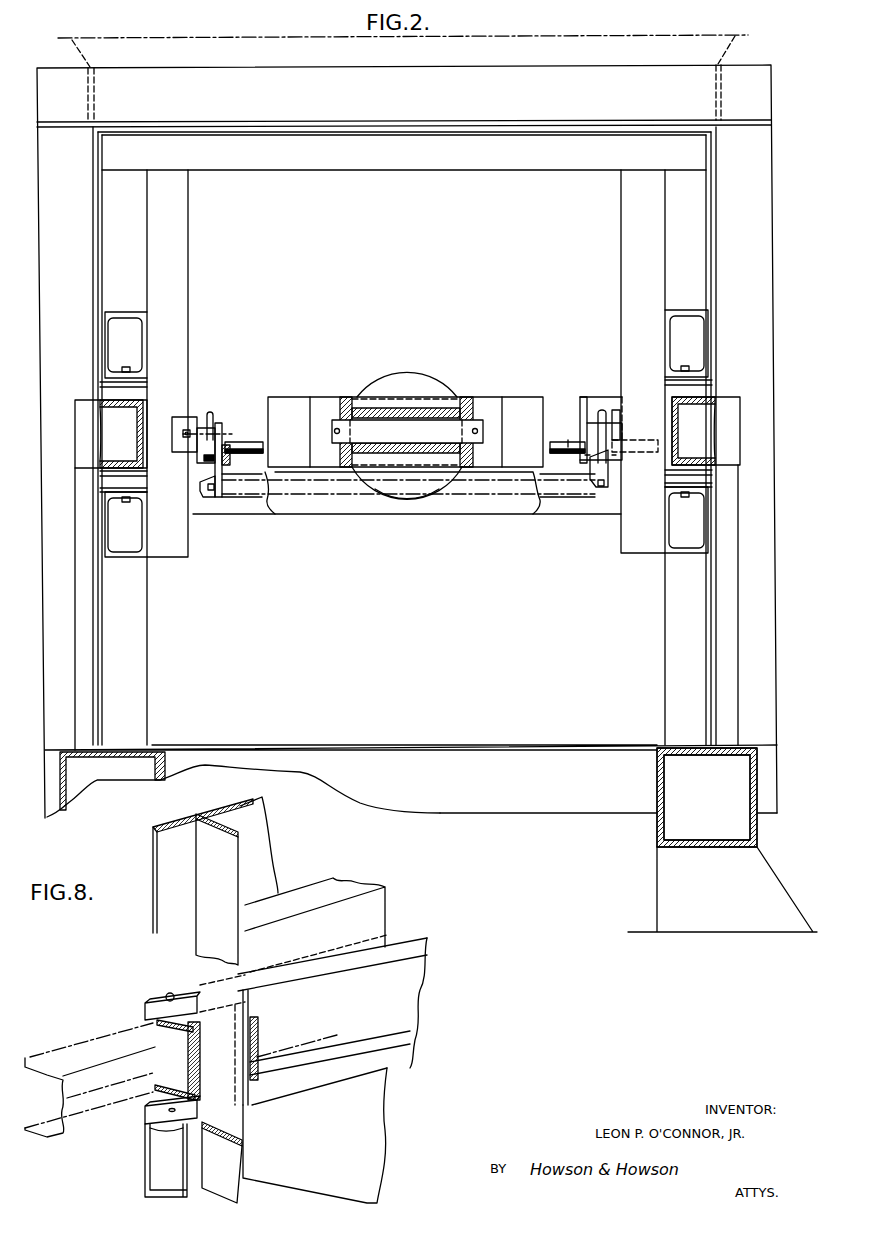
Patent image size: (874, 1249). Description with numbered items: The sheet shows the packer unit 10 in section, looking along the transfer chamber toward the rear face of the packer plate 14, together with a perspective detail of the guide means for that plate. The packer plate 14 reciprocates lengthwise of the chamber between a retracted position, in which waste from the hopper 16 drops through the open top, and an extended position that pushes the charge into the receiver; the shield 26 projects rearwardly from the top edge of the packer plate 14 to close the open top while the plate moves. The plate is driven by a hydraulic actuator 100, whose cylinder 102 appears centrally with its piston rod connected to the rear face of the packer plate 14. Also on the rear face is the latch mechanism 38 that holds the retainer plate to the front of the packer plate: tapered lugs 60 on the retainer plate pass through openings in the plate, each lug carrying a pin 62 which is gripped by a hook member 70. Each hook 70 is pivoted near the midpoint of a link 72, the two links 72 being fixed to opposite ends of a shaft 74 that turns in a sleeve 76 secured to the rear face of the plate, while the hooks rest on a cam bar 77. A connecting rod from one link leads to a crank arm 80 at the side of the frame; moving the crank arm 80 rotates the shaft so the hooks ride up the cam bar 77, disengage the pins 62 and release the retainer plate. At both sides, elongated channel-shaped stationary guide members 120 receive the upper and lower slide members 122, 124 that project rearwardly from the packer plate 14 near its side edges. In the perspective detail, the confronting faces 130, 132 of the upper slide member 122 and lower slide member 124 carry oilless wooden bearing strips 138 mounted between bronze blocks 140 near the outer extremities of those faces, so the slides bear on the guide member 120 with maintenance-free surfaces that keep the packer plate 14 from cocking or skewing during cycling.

In FIG. 2, the packer unit 10 is at (763, 58).
In FIG. 8, the packer unit 10 is at (278, 836).
In FIG. 2, the hopper 16 is at (72, 42).
In FIG. 2, the shield 26 is at (383, 131).
In FIG. 2, the packer plate 14 is at (410, 286).
In FIG. 2, the latch mechanism 38 is at (572, 426).
In FIG. 2, the lugs 60 is at (219, 423).
In FIG. 2, the pin 62 is at (614, 432).
In FIG. 2, the hook members 70 is at (209, 412).
In FIG. 2, the link 72 is at (204, 494).
In FIG. 2, the shaft 74 is at (608, 489).
In FIG. 2, the sleeve 76 is at (258, 494).
In FIG. 2, the cam bar 77 is at (248, 446).
In FIG. 2, the crank arm 80 is at (229, 458).
In FIG. 2, the hydraulic actuator 100 is at (438, 371).
In FIG. 2, the cylinder 102 is at (380, 373).
In FIG. 2, the stationary guide members 120 is at (108, 406).
In FIG. 8, the stationary guide members 120 is at (186, 1050).
In FIG. 2, the upper slide member 122 is at (127, 312).
In FIG. 8, the upper slide member 122 is at (335, 880).
In FIG. 2, the lower slide member 124 is at (135, 532).
In FIG. 8, the lower slide member 124 is at (362, 1100).
In FIG. 2, the confronting face 130 is at (133, 387).
In FIG. 8, the confronting face 130 is at (312, 977).
In FIG. 2, the confronting face 132 is at (137, 489).
In FIG. 8, the confronting face 132 is at (352, 1066).
In FIG. 8, the oilless bearing strips 138 is at (410, 946).
In FIG. 2, the bronze blocks 140 is at (135, 399).
In FIG. 8, the bronze blocks 140 is at (186, 1026).